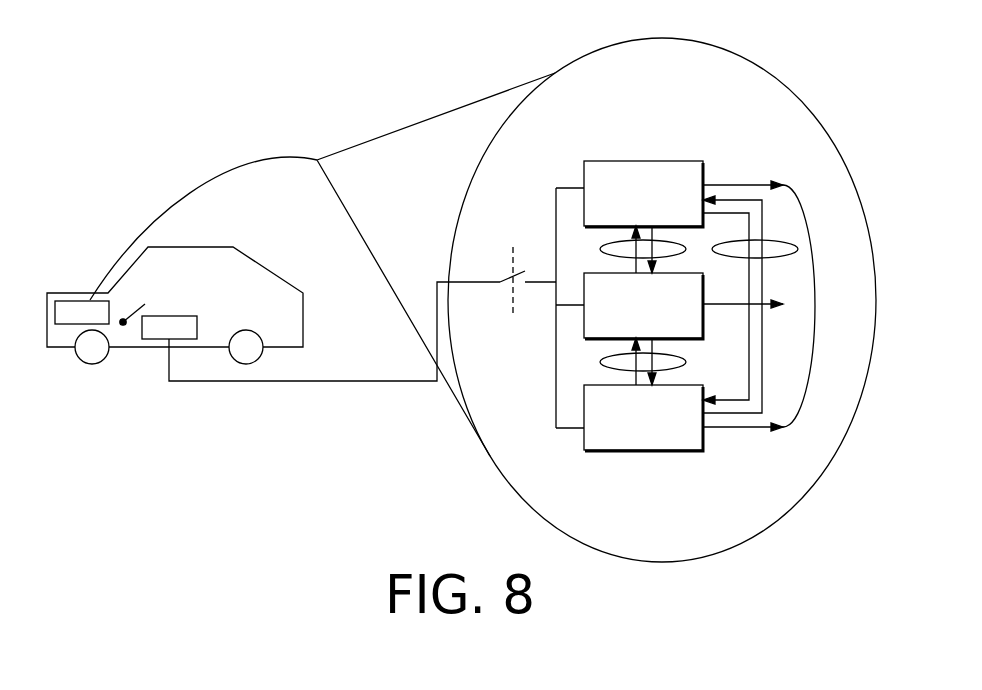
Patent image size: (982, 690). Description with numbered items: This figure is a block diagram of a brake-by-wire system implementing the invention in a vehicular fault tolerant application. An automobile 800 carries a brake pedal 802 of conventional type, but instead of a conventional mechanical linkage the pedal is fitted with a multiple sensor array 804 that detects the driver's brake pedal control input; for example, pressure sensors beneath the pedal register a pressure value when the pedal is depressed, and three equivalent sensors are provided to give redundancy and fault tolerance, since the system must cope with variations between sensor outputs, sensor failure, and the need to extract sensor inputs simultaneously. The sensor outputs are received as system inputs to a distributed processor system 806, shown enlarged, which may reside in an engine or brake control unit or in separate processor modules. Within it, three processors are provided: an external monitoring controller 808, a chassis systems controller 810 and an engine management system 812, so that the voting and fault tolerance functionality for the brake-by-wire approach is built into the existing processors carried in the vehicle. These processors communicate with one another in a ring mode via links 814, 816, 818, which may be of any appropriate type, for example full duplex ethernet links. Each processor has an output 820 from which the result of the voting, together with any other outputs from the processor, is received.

The automobile 800 is at (175, 299).
The brake pedal 802 is at (133, 312).
The multiple sensor array 804 is at (172, 318).
The distributed processor system 806 is at (77, 305).
The external monitoring controller 808 is at (642, 160).
The chassis systems controller 810 is at (587, 280).
The engine management system 812 is at (583, 418).
The link 814 is at (778, 240).
The link 816 is at (600, 363).
The link 818 is at (598, 243).
The output 820 is at (757, 308).